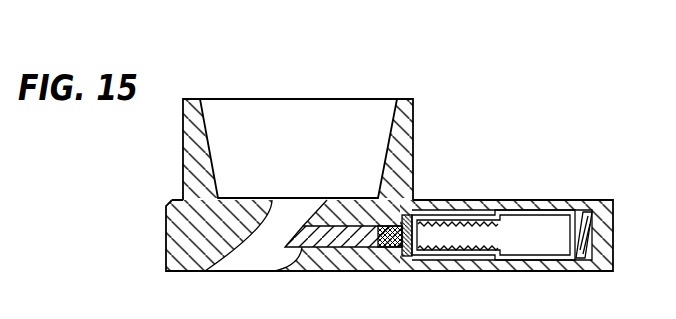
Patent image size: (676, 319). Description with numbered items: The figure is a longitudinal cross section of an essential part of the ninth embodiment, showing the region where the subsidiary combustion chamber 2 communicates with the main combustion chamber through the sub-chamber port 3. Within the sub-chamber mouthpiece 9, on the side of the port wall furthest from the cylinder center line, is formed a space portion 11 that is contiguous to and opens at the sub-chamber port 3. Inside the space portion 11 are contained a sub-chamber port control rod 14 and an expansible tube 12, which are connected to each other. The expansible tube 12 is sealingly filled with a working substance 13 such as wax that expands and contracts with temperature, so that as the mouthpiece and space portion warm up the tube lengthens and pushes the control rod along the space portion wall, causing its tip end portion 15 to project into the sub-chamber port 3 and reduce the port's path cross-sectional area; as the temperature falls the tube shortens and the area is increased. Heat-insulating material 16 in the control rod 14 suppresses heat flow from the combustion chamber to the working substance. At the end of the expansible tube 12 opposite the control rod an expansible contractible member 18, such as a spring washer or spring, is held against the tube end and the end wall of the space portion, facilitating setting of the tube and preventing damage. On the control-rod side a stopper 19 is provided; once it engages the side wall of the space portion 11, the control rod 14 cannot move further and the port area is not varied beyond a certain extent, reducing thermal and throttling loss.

The subsidiary combustion chamber 2 is at (379, 110).
The sub-chamber mouthpiece 9 is at (407, 120).
The sub-chamber port 3 is at (252, 255).
The tip end portion 15 is at (298, 252).
The sub-chamber port control rod 14 is at (345, 237).
The heat-insulating material 16 is at (388, 246).
The stopper 19 is at (420, 220).
The space portion 11 is at (485, 253).
The expansible tube 12 is at (458, 249).
The working substance 13 is at (542, 247).
The expansible contractible member 18 is at (592, 222).